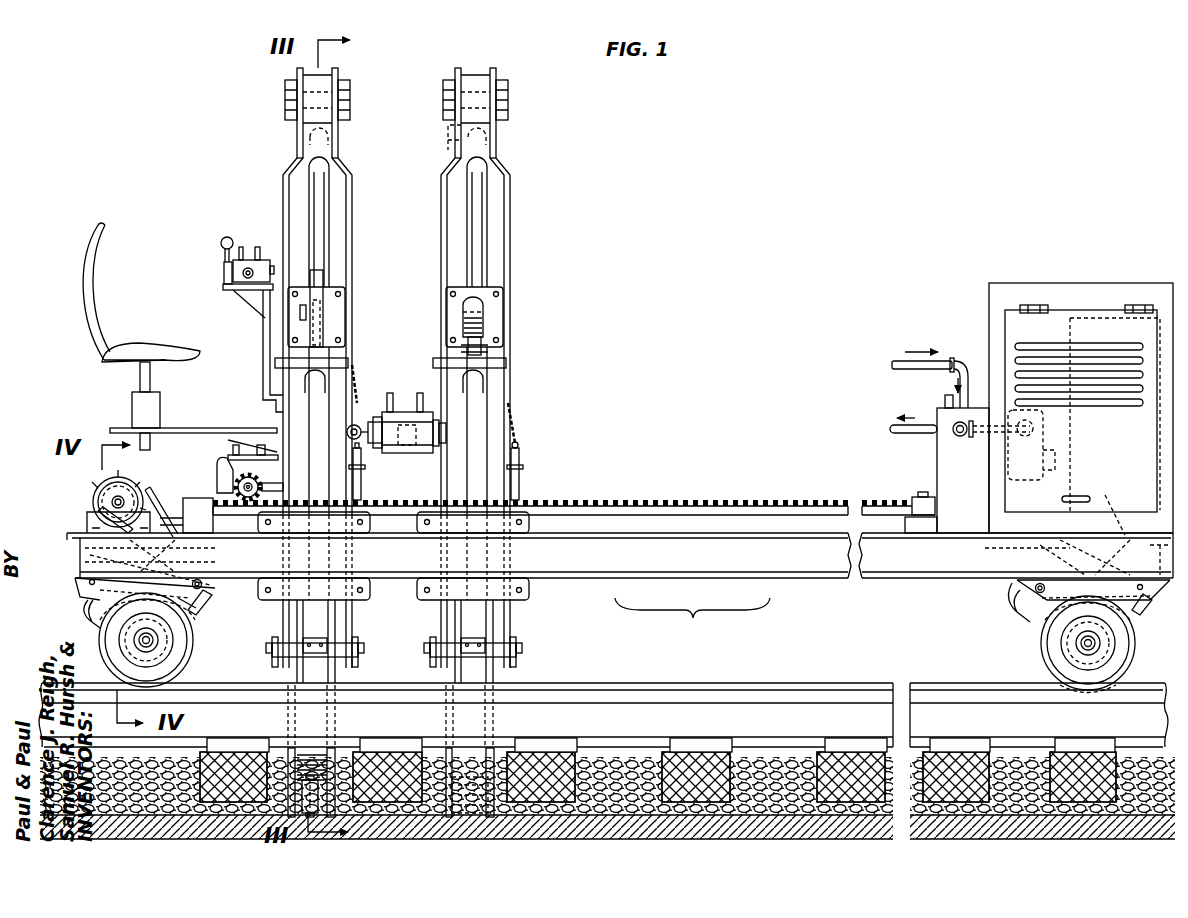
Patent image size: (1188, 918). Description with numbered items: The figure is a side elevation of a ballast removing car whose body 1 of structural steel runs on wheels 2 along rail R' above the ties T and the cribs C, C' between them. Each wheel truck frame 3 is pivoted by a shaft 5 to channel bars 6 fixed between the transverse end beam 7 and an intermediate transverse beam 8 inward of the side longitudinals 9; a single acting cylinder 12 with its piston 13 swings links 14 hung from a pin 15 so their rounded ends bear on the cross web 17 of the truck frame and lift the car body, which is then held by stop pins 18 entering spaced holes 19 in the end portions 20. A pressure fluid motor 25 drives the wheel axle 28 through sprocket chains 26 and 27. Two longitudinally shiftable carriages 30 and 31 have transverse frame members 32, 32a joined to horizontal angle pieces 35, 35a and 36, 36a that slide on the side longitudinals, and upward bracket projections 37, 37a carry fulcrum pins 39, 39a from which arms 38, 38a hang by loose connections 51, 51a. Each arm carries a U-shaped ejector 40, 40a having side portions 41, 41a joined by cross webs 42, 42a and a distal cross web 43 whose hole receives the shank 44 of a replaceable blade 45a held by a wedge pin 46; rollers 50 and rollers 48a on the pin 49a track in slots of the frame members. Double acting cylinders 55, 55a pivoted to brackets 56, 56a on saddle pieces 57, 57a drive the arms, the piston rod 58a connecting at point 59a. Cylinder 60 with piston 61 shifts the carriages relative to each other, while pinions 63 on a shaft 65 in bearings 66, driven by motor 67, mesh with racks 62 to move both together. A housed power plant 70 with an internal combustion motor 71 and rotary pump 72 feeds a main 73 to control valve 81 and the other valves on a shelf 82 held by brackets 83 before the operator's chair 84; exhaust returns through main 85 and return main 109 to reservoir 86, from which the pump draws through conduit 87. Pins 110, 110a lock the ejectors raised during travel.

The car body 1 is at (692, 618).
The wheels 2 is at (190, 655).
The wheel truck frame 3 is at (94, 607).
The shaft 5 is at (205, 586).
The channel bars 6 is at (150, 590).
The transverse end beam 7 is at (67, 533).
The intermediate transverse beam 8 is at (215, 585).
The side longitudinals 9 is at (715, 570).
The single acting pressure fluid cylinder 12 is at (614, 531).
The piston 13 is at (1070, 560).
The links 14 is at (85, 562).
The pin 15 is at (85, 548).
The cross web 17 is at (115, 628).
The retractable stop pins 18 is at (1168, 557).
The spaced holes 19 is at (90, 582).
The end portions 20 is at (210, 597).
The pressure fluid motor 25 is at (100, 490).
The sprocket chain 26 is at (97, 515).
The sprocket chain 27 is at (200, 612).
The wheel axle 28 is at (160, 645).
The carriage 30 is at (372, 85).
The carriage 31 is at (515, 127).
The frame members 32 is at (346, 425).
The frame members 32a is at (475, 581).
The horizontal angle piece 35 is at (370, 522).
The horizontal angle piece 35a is at (497, 522).
The horizontal angle piece 36 is at (370, 592).
The horizontal angle piece 36a is at (497, 590).
The bracket projections 37 is at (356, 219).
The bracket projections 37a is at (474, 413).
The arm 38 is at (329, 243).
The arm 38a is at (509, 378).
The fulcrum pin 39 is at (285, 95).
The fulcrum pin 39a is at (447, 99).
The ballast displacing element 40 is at (270, 635).
The ballast displacing element 40a is at (567, 654).
The side portions 41 is at (314, 690).
The side portions 41a is at (494, 752).
The cross web 42 is at (332, 688).
The cross web 42a is at (458, 661).
The cross web 43 is at (336, 752).
The shank 44 is at (333, 787).
The blade element 45a is at (470, 775).
The wedge pin 46 is at (290, 760).
The rollers 48a is at (471, 639).
The pin 49a is at (439, 626).
The rollers 50 is at (357, 640).
The loose connection 51 is at (310, 135).
The loose connection 51a is at (447, 144).
The double acting pressure fluid cylinder 55 is at (353, 280).
The double acting pressure fluid cylinder 55a is at (502, 313).
The bracket 56 is at (323, 325).
The bracket 56a is at (510, 348).
The saddle piece 57 is at (354, 354).
The saddle piece 57a is at (499, 365).
The piston rod 58a is at (511, 317).
The connection point 59a is at (511, 328).
The double acting pressure fluid cylinder 60 is at (408, 412).
The piston 61 is at (362, 425).
The toothed racks 62 is at (722, 506).
The spur pinions 63 is at (228, 470).
The crosswise shaft 65 is at (245, 517).
The bearings 66 is at (262, 488).
The pressure fluid motor 67 is at (217, 470).
The housed power plant 70 is at (1120, 278).
The internal combustion motor 71 is at (1068, 333).
The rotary pump 72 is at (1012, 495).
The main 73 is at (905, 430).
The control valve 81 is at (233, 280).
The shelf 82 is at (235, 291).
The brackets 83 is at (263, 357).
The chair 84 is at (88, 307).
The main 85 is at (945, 402).
The storage reservoir 86 is at (937, 458).
The connecting conduit 87 is at (972, 437).
The return main 109 is at (905, 360).
The pin 110 is at (361, 481).
The pin 110a is at (548, 451).
The ties T is at (658, 755).
The tie T' is at (387, 755).
The crib C is at (275, 779).
The crib C' is at (435, 787).
The rail R' is at (603, 700).